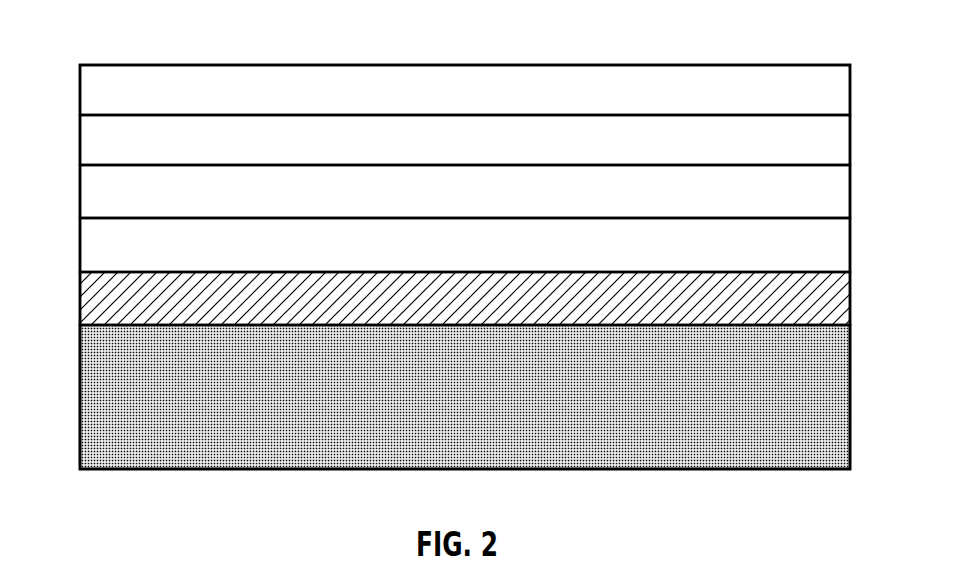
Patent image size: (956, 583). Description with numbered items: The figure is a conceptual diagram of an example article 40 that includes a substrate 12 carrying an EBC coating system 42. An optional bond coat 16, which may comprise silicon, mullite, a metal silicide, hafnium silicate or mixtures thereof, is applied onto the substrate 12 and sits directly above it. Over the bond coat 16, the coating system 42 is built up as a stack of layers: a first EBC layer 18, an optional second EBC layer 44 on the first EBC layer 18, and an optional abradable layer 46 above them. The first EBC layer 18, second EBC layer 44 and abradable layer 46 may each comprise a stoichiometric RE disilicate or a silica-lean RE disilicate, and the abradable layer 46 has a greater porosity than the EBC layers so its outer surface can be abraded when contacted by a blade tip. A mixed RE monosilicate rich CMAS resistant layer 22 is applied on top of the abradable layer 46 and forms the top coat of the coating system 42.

The article 40 is at (818, 61).
The CMAS resistant layer 22 is at (80, 86).
The abradable layer 46 is at (80, 135).
The second EBC layer 44 is at (80, 183).
The first EBC layer 18 is at (80, 243).
The bond coat 16 is at (80, 296).
The substrate 12 is at (80, 413).
The EBC coating system 42 is at (859, 65).